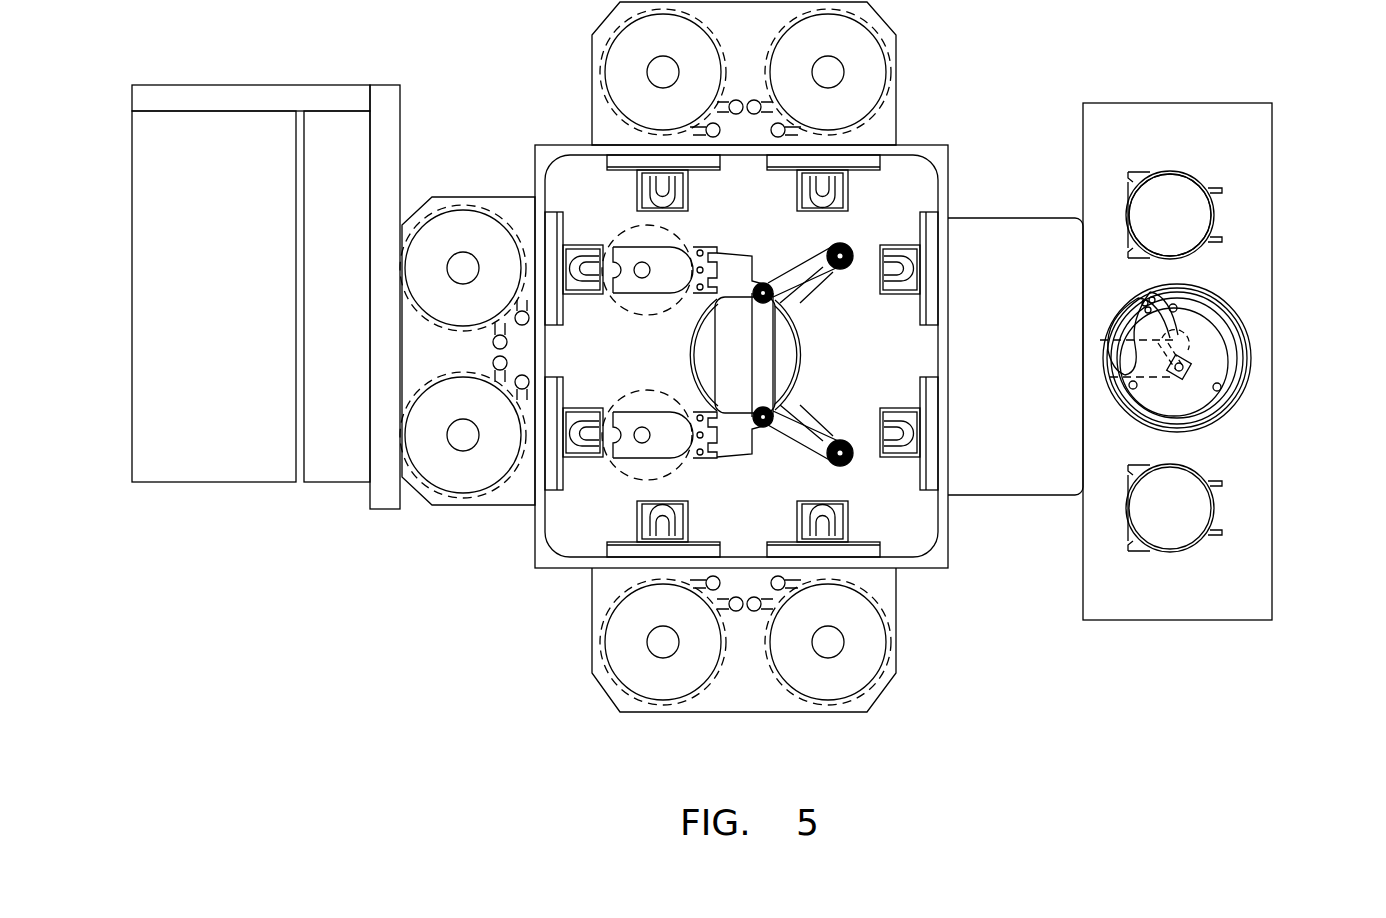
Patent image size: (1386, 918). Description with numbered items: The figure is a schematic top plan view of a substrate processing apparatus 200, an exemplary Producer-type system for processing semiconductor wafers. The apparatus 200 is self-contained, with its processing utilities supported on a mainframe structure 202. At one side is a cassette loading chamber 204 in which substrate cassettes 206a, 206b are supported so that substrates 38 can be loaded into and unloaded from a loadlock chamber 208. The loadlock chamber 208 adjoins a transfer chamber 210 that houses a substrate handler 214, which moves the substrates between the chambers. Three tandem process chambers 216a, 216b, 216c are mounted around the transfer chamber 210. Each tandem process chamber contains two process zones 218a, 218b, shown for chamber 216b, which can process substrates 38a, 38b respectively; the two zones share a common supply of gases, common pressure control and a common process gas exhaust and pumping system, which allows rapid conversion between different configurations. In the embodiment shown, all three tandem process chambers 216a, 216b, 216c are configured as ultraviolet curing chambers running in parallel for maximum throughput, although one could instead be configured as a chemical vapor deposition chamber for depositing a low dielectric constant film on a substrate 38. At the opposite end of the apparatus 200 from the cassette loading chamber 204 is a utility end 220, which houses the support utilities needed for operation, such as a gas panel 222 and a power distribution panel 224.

The substrate processing apparatus 200 is at (954, 33).
The mainframe structure 202 is at (463, 197).
The cassette loading chamber 204 is at (1225, 361).
The substrate cassette 206a is at (1246, 191).
The substrate cassette 206b is at (1200, 510).
The loadlock chamber 208 is at (1010, 218).
The transfer chamber 210 is at (950, 537).
The substrate handler 214 is at (798, 353).
The tandem process chamber 216a is at (592, 82).
The tandem process chamber 216b is at (732, 666).
The tandem process chamber 216c is at (467, 356).
The process zone 218a is at (659, 701).
The process zone 218b is at (832, 701).
The utility end 220 is at (266, 287).
The gas panel 222 is at (200, 482).
The power distribution panel 224 is at (330, 482).
The substrate 38 is at (1185, 182).
The substrate 38a is at (617, 671).
The substrate 38b is at (871, 671).